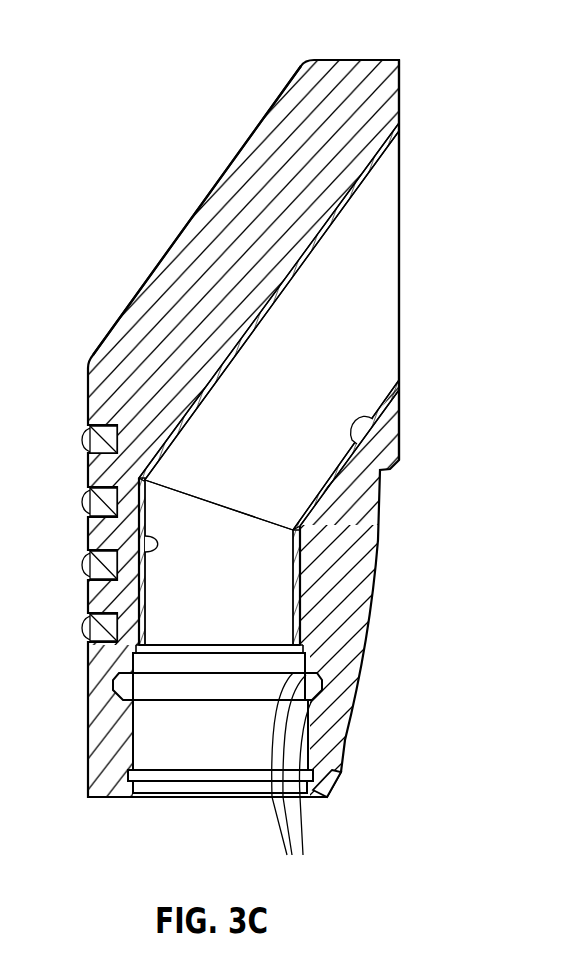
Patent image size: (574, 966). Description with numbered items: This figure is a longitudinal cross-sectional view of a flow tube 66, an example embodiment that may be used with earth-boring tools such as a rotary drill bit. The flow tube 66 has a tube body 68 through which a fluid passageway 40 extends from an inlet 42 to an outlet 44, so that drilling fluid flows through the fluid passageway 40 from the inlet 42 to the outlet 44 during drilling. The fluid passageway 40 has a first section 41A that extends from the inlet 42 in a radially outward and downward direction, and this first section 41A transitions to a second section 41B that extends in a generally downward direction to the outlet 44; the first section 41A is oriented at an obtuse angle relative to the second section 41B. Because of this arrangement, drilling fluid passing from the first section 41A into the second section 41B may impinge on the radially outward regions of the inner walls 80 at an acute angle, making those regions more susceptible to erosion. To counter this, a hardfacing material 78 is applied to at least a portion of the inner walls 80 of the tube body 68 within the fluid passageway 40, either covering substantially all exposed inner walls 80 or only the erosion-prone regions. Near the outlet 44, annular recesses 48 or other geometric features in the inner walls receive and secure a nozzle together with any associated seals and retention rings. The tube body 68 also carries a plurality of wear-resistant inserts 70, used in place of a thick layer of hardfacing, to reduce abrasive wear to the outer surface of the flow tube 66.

The flow tube 66 is at (206, 92).
The tube body 68 is at (212, 252).
The inlet 42 is at (404, 283).
The outlet 44 is at (151, 821).
The wear-resistant inserts 70 is at (100, 441).
The hardfacing material 78 is at (322, 234).
The first section of the fluid passageway 41A is at (325, 347).
The fluid passageway 40 is at (271, 452).
The second section of the fluid passageway 41B is at (180, 612).
The inner walls 80 is at (367, 422).
The annular recesses 48 is at (217, 765).